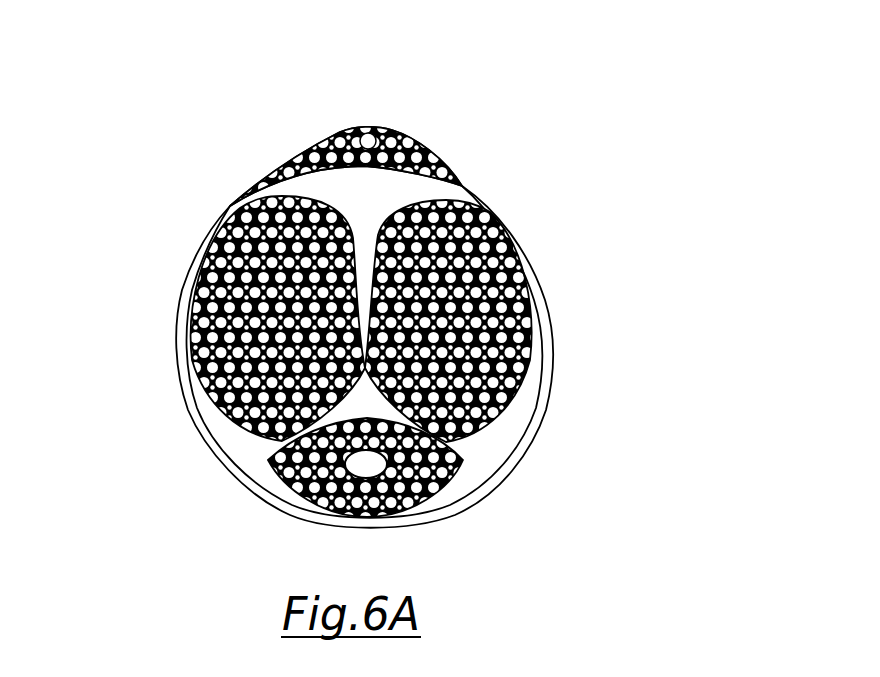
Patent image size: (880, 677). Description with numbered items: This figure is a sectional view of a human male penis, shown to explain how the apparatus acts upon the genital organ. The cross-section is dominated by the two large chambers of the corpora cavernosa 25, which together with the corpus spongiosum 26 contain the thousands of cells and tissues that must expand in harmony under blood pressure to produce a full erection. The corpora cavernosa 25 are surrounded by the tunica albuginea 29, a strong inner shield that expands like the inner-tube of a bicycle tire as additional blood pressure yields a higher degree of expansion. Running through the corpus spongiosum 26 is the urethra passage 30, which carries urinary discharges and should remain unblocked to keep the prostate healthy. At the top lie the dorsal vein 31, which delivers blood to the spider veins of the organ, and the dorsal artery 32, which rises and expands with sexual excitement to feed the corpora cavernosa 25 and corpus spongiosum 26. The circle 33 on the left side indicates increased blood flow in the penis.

The corpora cavernosa 25 is at (328, 307).
The corpus spongiosum 26 is at (357, 466).
The tunica albuginea 29 is at (533, 343).
The urethra passage 30 is at (318, 512).
The dorsal vein 31 is at (372, 146).
The dorsal artery 32 is at (303, 155).
The circle 33 is at (197, 318).